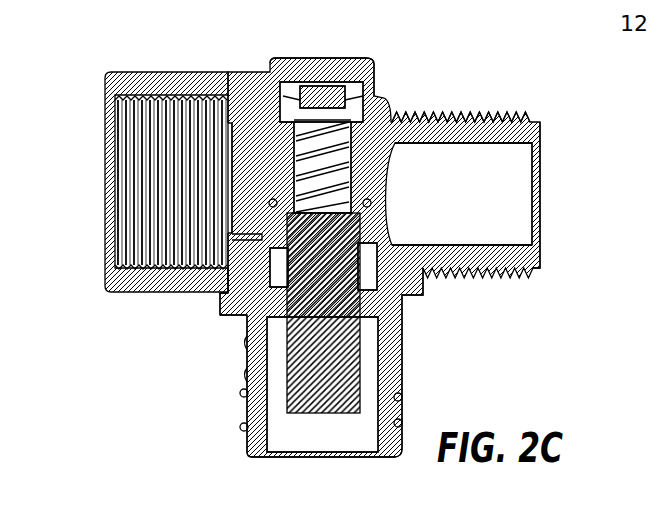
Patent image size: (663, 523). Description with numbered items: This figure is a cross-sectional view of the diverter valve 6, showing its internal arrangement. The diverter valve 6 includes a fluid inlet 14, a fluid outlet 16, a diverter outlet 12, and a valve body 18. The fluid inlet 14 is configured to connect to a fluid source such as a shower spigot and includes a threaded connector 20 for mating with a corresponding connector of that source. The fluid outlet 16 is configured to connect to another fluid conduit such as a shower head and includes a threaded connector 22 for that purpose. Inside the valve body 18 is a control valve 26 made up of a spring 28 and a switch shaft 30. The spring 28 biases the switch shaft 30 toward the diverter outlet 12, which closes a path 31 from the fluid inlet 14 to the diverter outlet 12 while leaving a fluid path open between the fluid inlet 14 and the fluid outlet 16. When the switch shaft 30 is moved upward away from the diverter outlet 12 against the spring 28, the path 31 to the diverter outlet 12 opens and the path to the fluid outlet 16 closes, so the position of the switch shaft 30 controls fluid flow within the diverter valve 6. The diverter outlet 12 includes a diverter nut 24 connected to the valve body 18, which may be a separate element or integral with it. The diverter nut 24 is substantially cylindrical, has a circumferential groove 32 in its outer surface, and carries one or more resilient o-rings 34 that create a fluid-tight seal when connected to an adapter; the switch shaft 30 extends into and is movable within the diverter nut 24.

The diverter valve 6 is at (292, 24).
The diverter outlet 12 is at (402, 375).
The fluid inlet 14 is at (147, 72).
The fluid outlet 16 is at (540, 257).
The valve body 18 is at (237, 82).
The threaded connector 20 is at (115, 110).
The threaded connector 22 is at (481, 112).
The diverter nut 24 is at (247, 377).
The control valve 26 is at (357, 58).
The spring 28 is at (318, 58).
The switch shaft 30 is at (263, 308).
The path 31 is at (260, 237).
The circumferential groove 32 is at (250, 345).
The resilient o-rings 34 is at (242, 427).